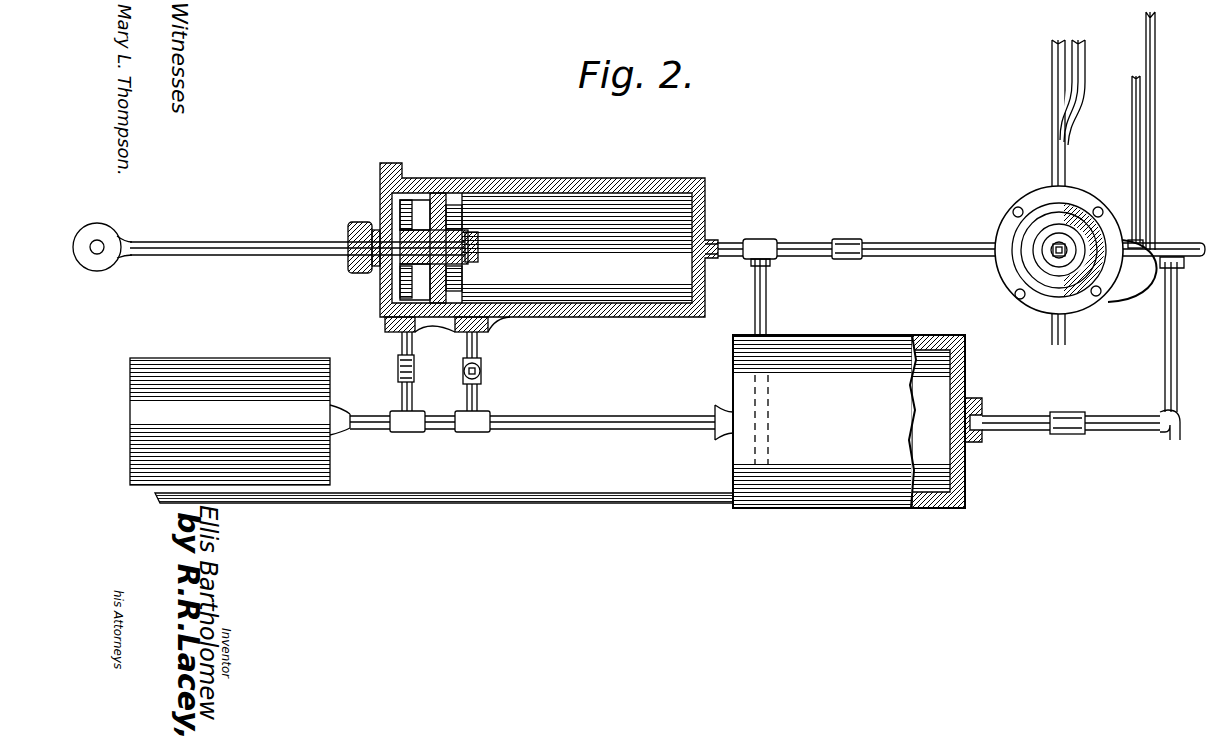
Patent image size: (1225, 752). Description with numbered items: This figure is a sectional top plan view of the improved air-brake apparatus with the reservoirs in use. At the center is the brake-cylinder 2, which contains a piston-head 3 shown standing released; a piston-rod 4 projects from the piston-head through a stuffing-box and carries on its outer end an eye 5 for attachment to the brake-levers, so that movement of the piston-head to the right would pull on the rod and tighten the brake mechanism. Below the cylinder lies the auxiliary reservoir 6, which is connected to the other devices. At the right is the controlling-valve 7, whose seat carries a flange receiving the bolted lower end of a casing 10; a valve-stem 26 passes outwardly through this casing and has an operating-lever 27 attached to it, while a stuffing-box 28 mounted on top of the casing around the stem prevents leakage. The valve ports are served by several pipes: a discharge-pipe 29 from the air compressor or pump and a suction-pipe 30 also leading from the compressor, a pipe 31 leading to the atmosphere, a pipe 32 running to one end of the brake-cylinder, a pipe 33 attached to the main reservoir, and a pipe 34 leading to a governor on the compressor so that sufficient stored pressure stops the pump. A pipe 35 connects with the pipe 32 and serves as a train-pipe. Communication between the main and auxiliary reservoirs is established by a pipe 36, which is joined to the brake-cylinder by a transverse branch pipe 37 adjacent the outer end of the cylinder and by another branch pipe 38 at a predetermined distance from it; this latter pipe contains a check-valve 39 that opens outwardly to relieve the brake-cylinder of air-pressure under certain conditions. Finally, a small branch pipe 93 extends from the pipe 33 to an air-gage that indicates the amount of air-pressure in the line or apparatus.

The brake-cylinder 2 is at (549, 242).
The piston-head 3 is at (455, 192).
The piston-rod 4 is at (340, 236).
The eye 5 is at (102, 238).
The auxiliary reservoir 6 is at (240, 421).
The controlling-valve 7 is at (1086, 194).
The casing 10 is at (1020, 212).
The valve-stem 26 is at (1054, 260).
The operating-lever 27 is at (1162, 246).
The stuffing-box 28 is at (1052, 240).
The discharge-pipe 29 is at (1078, 124).
The suction-pipe 30 is at (1055, 84).
The pipe to atmosphere 31 is at (1066, 332).
The pipe 32 is at (885, 262).
The pipe 33 is at (1095, 348).
The pipe 34 is at (1132, 279).
The train-pipe 35 is at (770, 308).
The pipe 36 is at (532, 413).
The transverse branch pipe 37 is at (412, 392).
The branch pipe 38 is at (480, 350).
The check-valve 39 is at (482, 373).
The small branch pipe 93 is at (1132, 140).